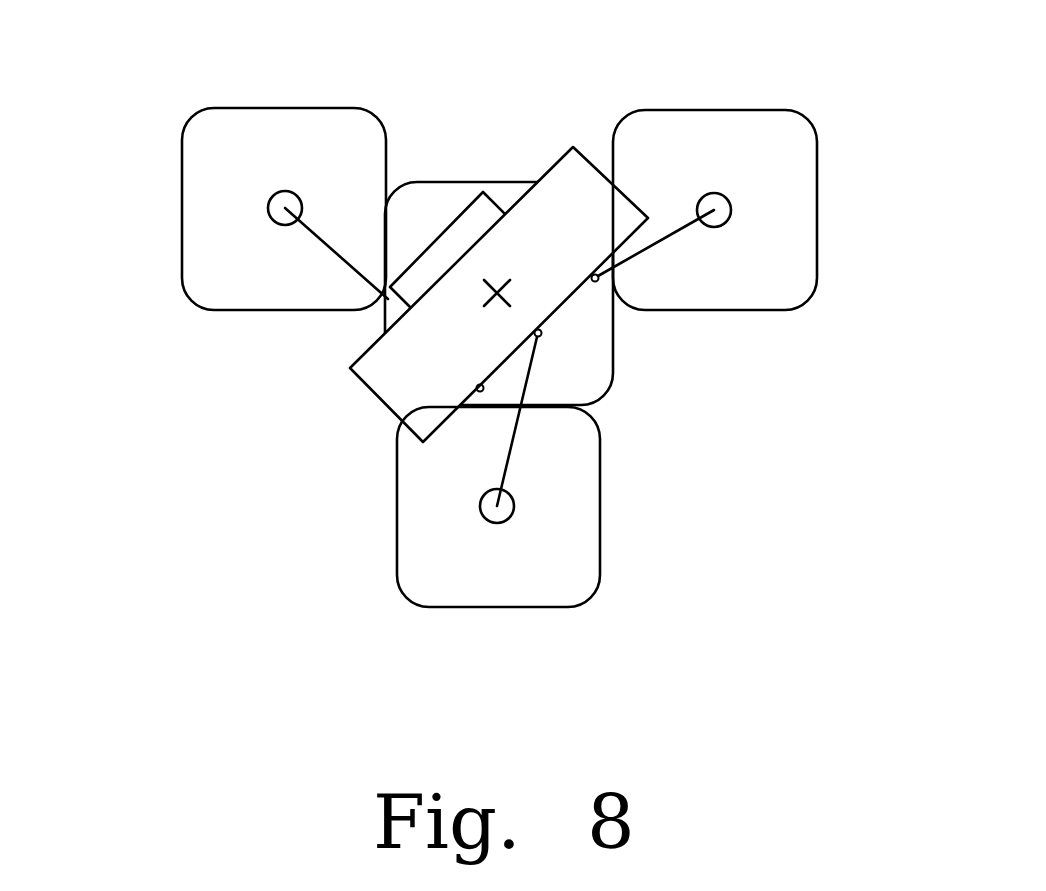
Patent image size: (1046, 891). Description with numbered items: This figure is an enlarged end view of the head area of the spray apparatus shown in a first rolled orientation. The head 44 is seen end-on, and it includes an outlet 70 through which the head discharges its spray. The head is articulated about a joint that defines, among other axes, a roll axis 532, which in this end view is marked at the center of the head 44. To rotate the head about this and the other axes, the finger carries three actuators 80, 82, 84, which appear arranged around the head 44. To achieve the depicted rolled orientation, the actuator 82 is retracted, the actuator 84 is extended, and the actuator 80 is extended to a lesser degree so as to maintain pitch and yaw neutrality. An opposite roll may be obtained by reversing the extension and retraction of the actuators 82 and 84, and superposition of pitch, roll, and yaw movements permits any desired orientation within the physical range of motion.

The actuator 84 is at (148, 158).
The actuator 82 is at (840, 158).
The actuator 80 is at (620, 502).
The outlet 70 is at (455, 212).
The head 44 is at (553, 218).
The roll axis 532 is at (507, 293).